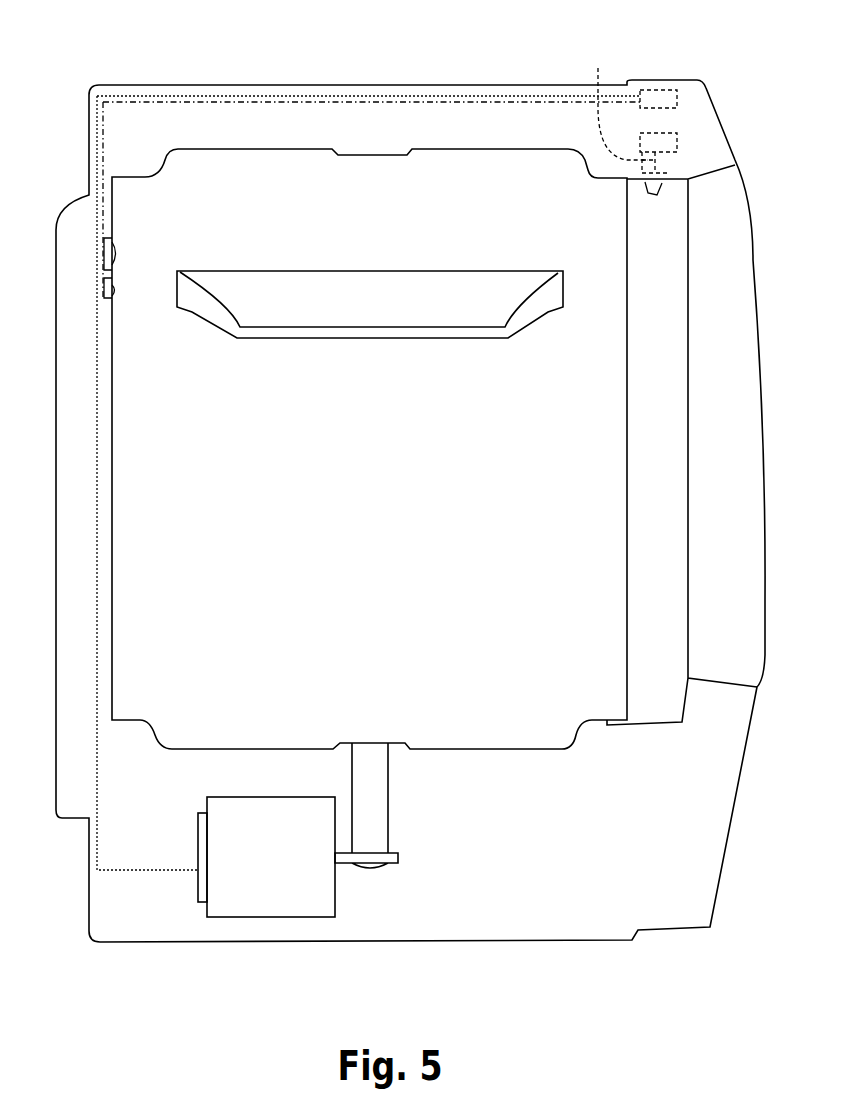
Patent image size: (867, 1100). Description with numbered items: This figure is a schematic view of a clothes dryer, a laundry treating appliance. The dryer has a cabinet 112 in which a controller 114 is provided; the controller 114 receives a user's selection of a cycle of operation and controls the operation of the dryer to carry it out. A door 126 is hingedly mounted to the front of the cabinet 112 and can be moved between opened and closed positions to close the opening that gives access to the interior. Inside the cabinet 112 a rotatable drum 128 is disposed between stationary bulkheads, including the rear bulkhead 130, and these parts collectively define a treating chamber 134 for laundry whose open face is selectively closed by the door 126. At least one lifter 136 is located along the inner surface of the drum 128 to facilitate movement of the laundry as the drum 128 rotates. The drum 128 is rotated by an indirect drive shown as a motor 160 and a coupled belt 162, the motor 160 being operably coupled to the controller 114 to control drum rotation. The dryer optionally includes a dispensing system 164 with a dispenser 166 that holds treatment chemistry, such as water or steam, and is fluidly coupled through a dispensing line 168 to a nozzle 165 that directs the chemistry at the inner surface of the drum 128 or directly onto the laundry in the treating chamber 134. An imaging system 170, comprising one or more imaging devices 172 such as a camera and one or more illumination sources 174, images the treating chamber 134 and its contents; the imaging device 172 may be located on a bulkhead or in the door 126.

The cabinet 112 is at (143, 85).
The controller 114 is at (648, 100).
The door 126 is at (723, 308).
The rotatable drum 128 is at (296, 150).
The rear bulkhead 130 is at (112, 627).
The treating chamber 134 is at (193, 476).
The lifter 136 is at (397, 293).
The motor 160 is at (248, 877).
The belt 162 is at (378, 825).
The dispensing system 164 is at (680, 173).
The nozzle 165 is at (657, 194).
The dispenser 166 is at (677, 140).
The dispensing line 168 is at (615, 103).
The imaging system 170 is at (92, 266).
The imaging device 172 is at (105, 295).
The illumination source 174 is at (105, 252).